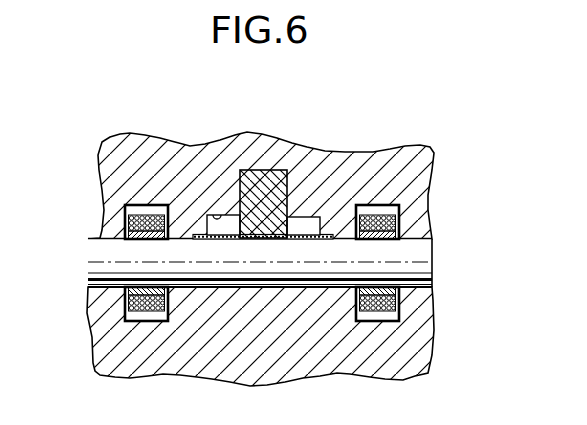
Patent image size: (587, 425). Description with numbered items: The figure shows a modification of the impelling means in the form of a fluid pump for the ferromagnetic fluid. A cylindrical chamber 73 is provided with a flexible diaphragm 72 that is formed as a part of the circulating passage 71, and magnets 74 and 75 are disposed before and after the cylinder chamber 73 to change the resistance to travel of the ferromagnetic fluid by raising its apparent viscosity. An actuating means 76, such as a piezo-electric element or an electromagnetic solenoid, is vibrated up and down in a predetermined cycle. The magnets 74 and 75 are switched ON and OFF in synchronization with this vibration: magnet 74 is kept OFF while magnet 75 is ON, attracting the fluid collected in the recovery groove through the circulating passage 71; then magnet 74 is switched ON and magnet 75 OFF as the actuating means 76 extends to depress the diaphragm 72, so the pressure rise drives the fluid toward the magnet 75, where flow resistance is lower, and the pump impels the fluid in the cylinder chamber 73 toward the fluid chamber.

The circulating passage 71 is at (422, 270).
The flexible diaphragm 72 is at (307, 236).
The cylindrical chamber 73 is at (213, 216).
The magnet 74 is at (148, 210).
The magnet 75 is at (398, 227).
The actuating means 76 is at (268, 178).